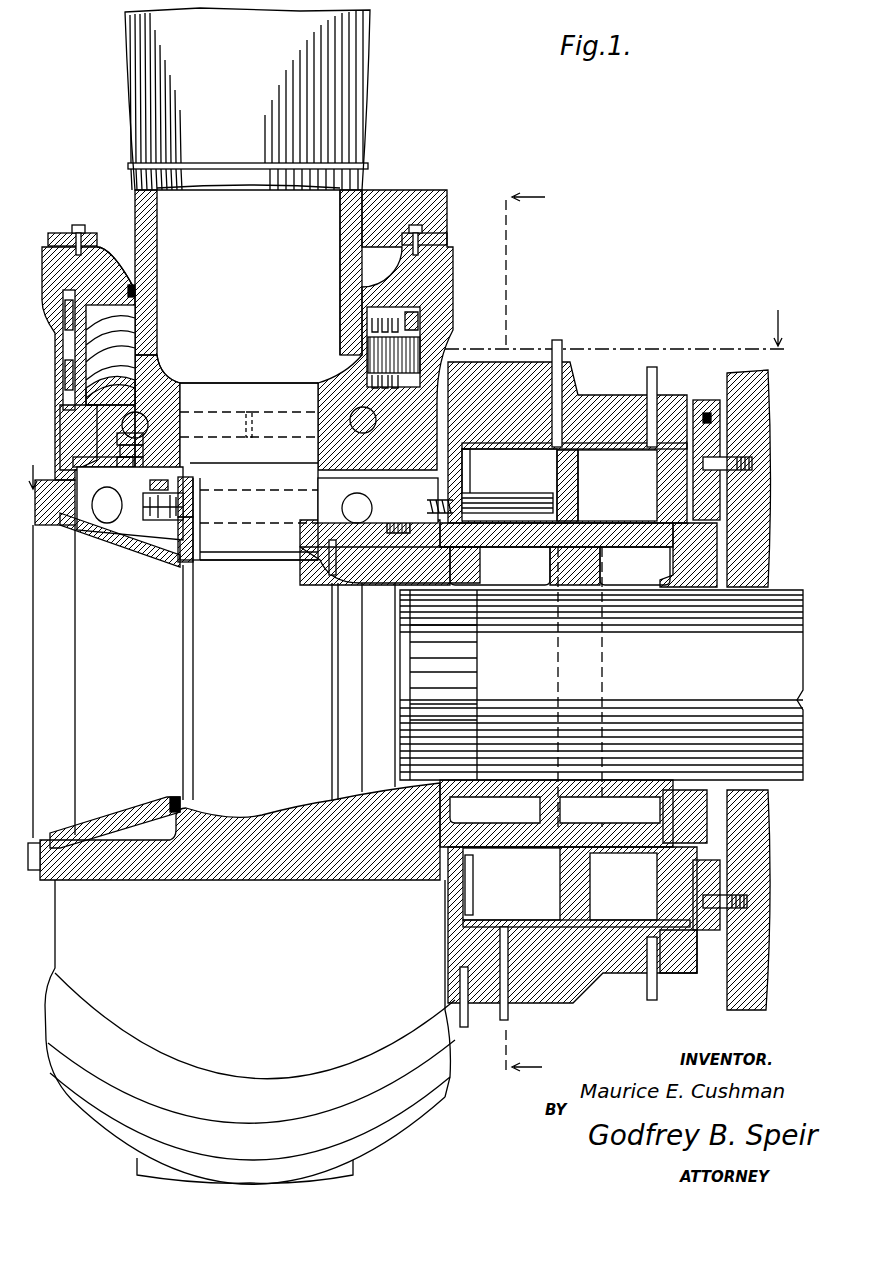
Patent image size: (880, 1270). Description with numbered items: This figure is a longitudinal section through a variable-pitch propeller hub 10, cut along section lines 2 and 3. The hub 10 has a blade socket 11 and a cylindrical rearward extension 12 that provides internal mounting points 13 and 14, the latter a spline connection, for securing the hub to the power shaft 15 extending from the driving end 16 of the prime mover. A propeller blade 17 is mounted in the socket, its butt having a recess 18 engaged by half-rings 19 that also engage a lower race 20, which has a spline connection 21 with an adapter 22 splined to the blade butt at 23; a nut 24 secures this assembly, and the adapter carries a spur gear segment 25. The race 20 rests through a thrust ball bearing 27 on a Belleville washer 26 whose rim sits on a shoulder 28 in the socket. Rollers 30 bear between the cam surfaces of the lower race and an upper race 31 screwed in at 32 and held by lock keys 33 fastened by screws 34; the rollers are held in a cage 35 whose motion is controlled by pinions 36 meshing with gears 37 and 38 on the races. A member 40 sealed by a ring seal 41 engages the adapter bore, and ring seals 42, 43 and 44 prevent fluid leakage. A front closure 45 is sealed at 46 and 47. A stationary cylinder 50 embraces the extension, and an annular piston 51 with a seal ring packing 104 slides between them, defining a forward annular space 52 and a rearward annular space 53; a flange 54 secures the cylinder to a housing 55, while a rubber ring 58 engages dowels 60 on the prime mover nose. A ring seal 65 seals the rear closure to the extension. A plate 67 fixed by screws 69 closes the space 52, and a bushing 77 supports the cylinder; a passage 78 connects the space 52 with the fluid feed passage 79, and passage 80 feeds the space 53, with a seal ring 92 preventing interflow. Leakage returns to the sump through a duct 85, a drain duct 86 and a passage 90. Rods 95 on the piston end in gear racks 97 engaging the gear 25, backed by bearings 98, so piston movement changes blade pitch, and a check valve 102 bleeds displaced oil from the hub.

The section line 2- 2 is at (549, 637).
The section line 3- 3 is at (50, 498).
The propeller hub 10 is at (272, 815).
The blade socket 11 is at (454, 260).
The cylindrical rearward extension 12 is at (512, 545).
The internal mounting point 13 is at (673, 562).
The spline connection mounting point 14 is at (470, 576).
The power shaft 15 is at (601, 685).
The driving end of prime mover 16 is at (755, 540).
The propeller blade 17 is at (360, 125).
The recess 18 is at (166, 376).
The half-rings 19 is at (149, 420).
The lower race 20 is at (82, 430).
The spline connection 21 is at (150, 441).
The adapter 22 is at (160, 450).
The spline 23 is at (160, 462).
The nut 24 is at (117, 468).
The spur gear segment 25 is at (155, 518).
The Belleville washer 26 is at (82, 469).
The thrust ball bearing 27 is at (370, 500).
The shoulder 28 is at (58, 472).
The rollers 30 is at (122, 340).
The upper race 31 is at (118, 275).
The screw thread 32 is at (52, 246).
The lock key 33 is at (447, 236).
The screw 34 is at (417, 226).
The cage 35 is at (437, 330).
The pinion 36 is at (433, 345).
The gear 37 is at (447, 374).
The gear 38 is at (440, 314).
The sealing member 40 is at (192, 540).
The ring seal 41 is at (190, 500).
The ring seal 42 is at (158, 486).
The ring seal 43 is at (137, 291).
The ring seal 44 is at (70, 310).
The closure 45 is at (123, 810).
The seal 46 is at (58, 838).
The seal 47 is at (180, 798).
The cylinder 50 is at (525, 918).
The annular piston 51 is at (592, 500).
The forward annular space 52 is at (509, 485).
The rearward annular space 53 is at (617, 485).
The flange 54 is at (698, 950).
The cylinder-embracing housing 55 is at (590, 390).
The rubber ring 58 is at (722, 930).
The dowel 60 is at (752, 462).
The ring seal 65 is at (665, 840).
The plate 67 is at (470, 900).
The screw 69 is at (470, 845).
The bushing 77 is at (480, 920).
The passage 78 is at (477, 471).
The fluid feed passage 79 is at (565, 385).
The passage 80 is at (652, 398).
The duct 85 is at (448, 993).
The drain duct 86 is at (508, 1005).
The passage 90 is at (650, 965).
The seal ring 92 is at (590, 450).
The rod 95 is at (495, 505).
The gear rack 97 is at (120, 545).
The back-up bearing 98 is at (318, 560).
The check valve 102 is at (432, 512).
The seal ring packing 104 is at (575, 566).